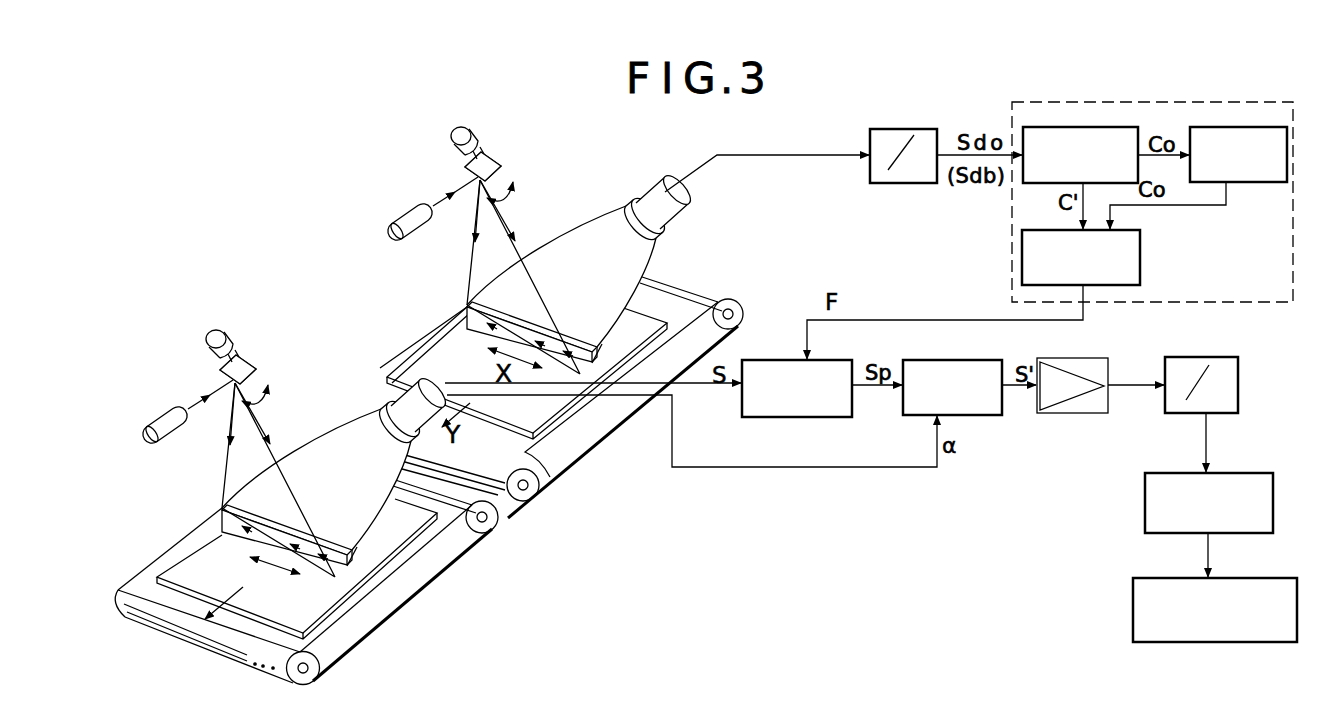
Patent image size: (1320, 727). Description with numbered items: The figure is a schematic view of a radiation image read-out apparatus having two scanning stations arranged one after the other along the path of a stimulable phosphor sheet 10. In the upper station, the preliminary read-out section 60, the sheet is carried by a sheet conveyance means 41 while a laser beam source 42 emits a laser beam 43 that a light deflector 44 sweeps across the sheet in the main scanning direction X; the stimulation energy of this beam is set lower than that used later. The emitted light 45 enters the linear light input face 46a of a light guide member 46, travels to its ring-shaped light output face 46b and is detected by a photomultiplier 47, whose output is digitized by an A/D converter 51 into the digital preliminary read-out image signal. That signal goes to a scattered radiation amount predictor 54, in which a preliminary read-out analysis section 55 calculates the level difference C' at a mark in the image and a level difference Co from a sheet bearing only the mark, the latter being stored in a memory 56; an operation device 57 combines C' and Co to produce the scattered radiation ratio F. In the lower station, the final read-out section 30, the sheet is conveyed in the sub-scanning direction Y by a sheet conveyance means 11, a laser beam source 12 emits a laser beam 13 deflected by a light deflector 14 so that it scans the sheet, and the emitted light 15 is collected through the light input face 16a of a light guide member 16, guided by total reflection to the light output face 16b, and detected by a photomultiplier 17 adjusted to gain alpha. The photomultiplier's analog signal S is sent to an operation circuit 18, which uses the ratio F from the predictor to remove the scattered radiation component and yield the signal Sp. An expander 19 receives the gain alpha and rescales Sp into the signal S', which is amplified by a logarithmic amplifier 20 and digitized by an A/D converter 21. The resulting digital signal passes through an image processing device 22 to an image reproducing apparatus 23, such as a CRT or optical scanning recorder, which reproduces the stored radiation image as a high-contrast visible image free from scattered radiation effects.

The stimulable phosphor sheet 10 is at (327, 596).
The sheet conveyance means 11 is at (290, 642).
The laser beam source 12 is at (178, 404).
The laser beam 13 is at (262, 413).
The light deflector 14 is at (250, 360).
The emitted light 15 is at (236, 535).
The light guide member 16 is at (322, 430).
The light input face 16a is at (349, 548).
The light output face 16b is at (384, 400).
The photomultiplier 17 is at (418, 385).
The operation circuit 18 is at (814, 418).
The expander 19 is at (915, 416).
The logarithmic amplifier 20 is at (1083, 414).
The A/D converter 21 is at (1216, 416).
The image processing device 22 is at (1145, 493).
The image reproducing apparatus 23 is at (1133, 609).
The final read-out section 30 is at (238, 317).
The sheet conveyance means 41 is at (540, 452).
The laser beam source 42 is at (418, 207).
The laser beam 43 is at (516, 216).
The light deflector 44 is at (500, 160).
The emitted light 45 is at (483, 328).
The light guide member 46 is at (587, 224).
The light input face 46a is at (591, 347).
The light output face 46b is at (672, 226).
The photomultiplier 47 is at (652, 182).
The A/D converter 51 is at (905, 129).
The scattered radiation amount predictor 54 is at (1147, 100).
The preliminary read-out analysis section 55 is at (1060, 127).
The memory 56 is at (1248, 182).
The operation device 57 is at (1140, 251).
The preliminary read-out section 60 is at (380, 206).